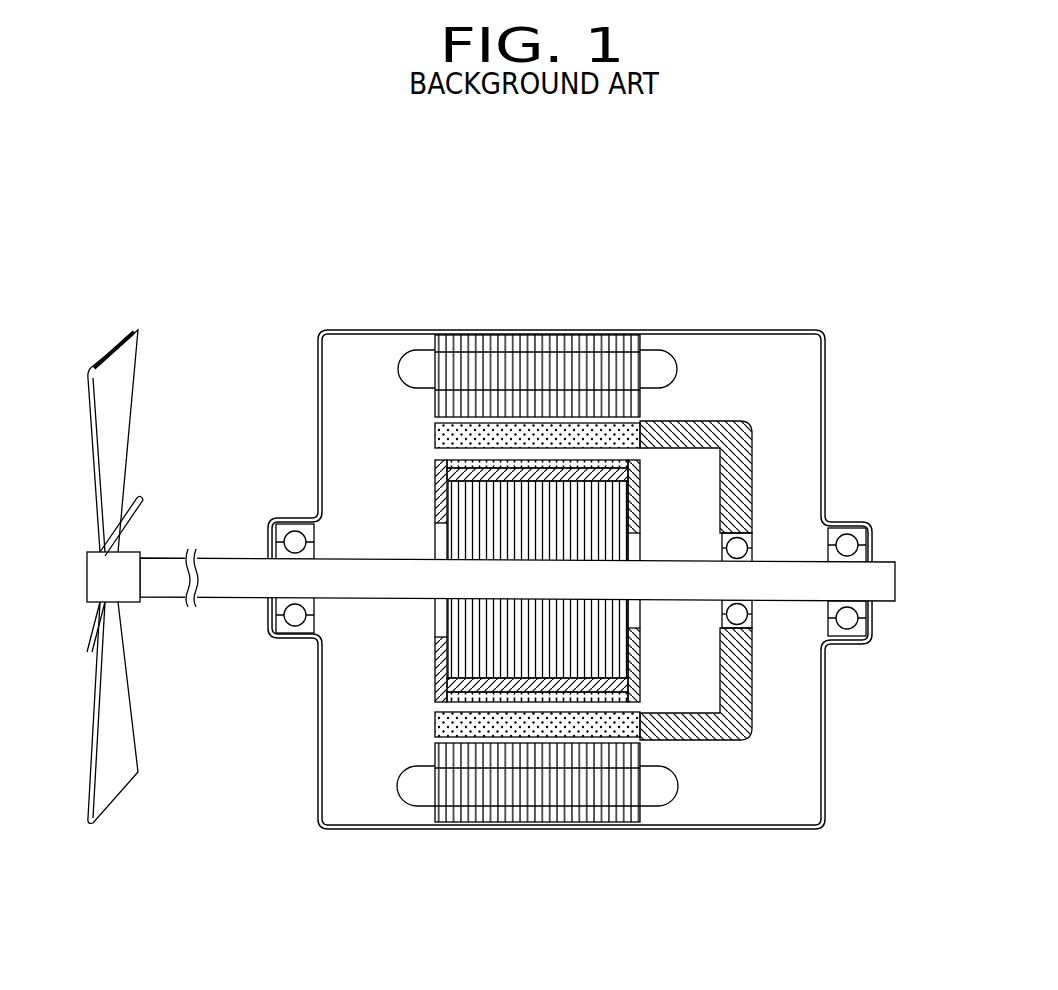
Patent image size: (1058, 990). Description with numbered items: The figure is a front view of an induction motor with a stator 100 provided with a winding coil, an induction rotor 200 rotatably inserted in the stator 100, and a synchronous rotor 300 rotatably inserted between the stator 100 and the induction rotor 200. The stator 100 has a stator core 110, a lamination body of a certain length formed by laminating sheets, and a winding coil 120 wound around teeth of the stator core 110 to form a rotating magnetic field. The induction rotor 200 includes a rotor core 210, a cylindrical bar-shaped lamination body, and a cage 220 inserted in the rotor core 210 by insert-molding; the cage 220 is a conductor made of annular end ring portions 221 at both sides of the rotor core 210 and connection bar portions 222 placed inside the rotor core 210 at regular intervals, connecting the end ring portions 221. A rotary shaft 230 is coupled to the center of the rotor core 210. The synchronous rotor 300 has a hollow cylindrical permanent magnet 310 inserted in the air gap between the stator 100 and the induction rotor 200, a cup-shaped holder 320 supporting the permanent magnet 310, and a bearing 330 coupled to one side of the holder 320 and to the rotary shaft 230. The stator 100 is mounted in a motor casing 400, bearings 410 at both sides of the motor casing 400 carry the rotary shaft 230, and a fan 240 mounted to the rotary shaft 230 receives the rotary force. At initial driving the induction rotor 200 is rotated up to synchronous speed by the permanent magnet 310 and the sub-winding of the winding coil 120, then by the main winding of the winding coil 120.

The stator 100 is at (516, 522).
The stator core 110 is at (432, 337).
The winding coil 120 is at (440, 266).
The induction rotor 200 is at (534, 673).
The rotor core 210 is at (438, 623).
The cage 220 is at (564, 673).
The end ring portion 221 is at (436, 692).
The connection bar portion 222 is at (482, 690).
The rotary shaft 230 is at (898, 580).
The fan 240 is at (116, 352).
The synchronous rotor 300 is at (678, 477).
The permanent magnet 310 is at (630, 418).
The holder 320 is at (738, 418).
The bearing 330 is at (738, 540).
The motor casing 400 is at (546, 329).
The bearings 410 is at (290, 522).